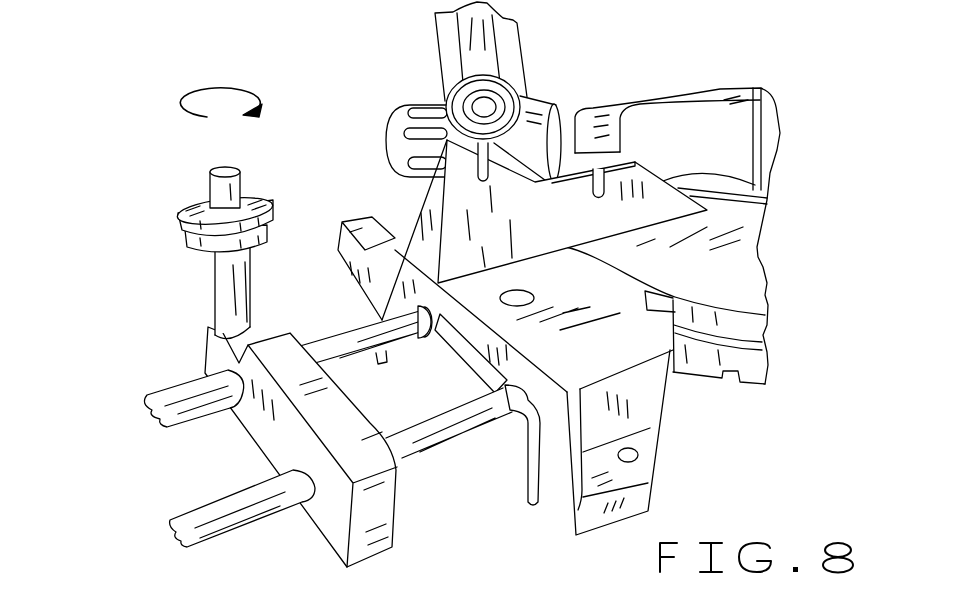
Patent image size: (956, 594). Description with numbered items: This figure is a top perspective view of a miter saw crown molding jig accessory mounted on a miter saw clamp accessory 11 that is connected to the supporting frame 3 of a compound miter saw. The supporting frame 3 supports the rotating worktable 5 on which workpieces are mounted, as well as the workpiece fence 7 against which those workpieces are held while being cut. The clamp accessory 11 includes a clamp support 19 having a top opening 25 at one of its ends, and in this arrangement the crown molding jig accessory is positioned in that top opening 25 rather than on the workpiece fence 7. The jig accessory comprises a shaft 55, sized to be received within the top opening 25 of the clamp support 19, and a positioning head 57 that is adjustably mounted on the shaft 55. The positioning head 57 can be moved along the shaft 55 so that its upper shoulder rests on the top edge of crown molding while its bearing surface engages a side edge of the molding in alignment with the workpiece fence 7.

The miter saw clamp accessory 11 is at (144, 444).
The supporting frame 3 is at (593, 357).
The rotating worktable 5 is at (730, 281).
The workpiece fence 7 is at (520, 208).
The clamp support 19 is at (278, 425).
The top opening 25 is at (216, 297).
The shaft 55 is at (240, 288).
The positioning head 57 is at (200, 213).